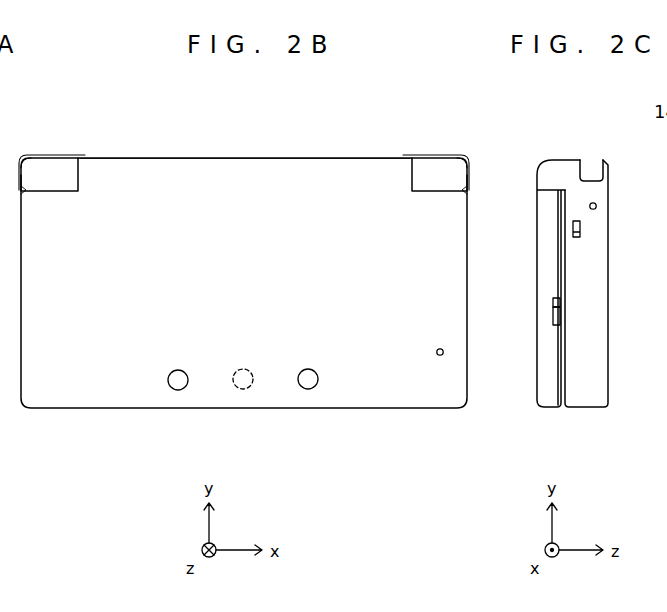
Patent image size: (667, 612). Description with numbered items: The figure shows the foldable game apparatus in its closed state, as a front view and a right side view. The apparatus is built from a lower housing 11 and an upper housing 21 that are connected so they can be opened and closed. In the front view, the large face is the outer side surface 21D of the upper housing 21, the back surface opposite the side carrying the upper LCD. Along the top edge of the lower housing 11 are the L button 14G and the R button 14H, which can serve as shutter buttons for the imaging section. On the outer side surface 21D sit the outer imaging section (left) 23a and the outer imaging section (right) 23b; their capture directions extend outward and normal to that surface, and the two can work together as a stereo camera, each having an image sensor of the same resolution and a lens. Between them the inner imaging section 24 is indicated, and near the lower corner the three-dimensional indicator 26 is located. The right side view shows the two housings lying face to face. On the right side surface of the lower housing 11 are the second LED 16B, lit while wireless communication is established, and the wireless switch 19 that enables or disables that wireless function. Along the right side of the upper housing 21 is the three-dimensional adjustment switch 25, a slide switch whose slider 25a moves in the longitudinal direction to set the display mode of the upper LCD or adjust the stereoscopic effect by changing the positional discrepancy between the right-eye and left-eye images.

In FIG. 2C, the lower housing 11 is at (592, 408).
In FIG. 2B, the L button 14G is at (75, 156).
In FIG. 2B, the R button 14H is at (410, 157).
In FIG. 2C, the R button 14H is at (594, 160).
In FIG. 2C, the second LED 16B is at (597, 207).
In FIG. 2C, the wireless switch 19 is at (581, 225).
In FIG. 2B, the upper housing 21 is at (233, 157).
In FIG. 2C, the upper housing 21 is at (541, 408).
In FIG. 2B, the outer side surface 21D is at (342, 180).
In FIG. 2B, the outer imaging section (left) 23a is at (180, 390).
In FIG. 2B, the outer imaging section (right) 23b is at (310, 389).
In FIG. 2B, the inner imaging section 24 is at (245, 389).
In FIG. 2C, the 3D adjustment switch 25 is at (553, 300).
In FIG. 2C, the slider 25a is at (553, 315).
In FIG. 2B, the 3D indicator 26 is at (444, 352).